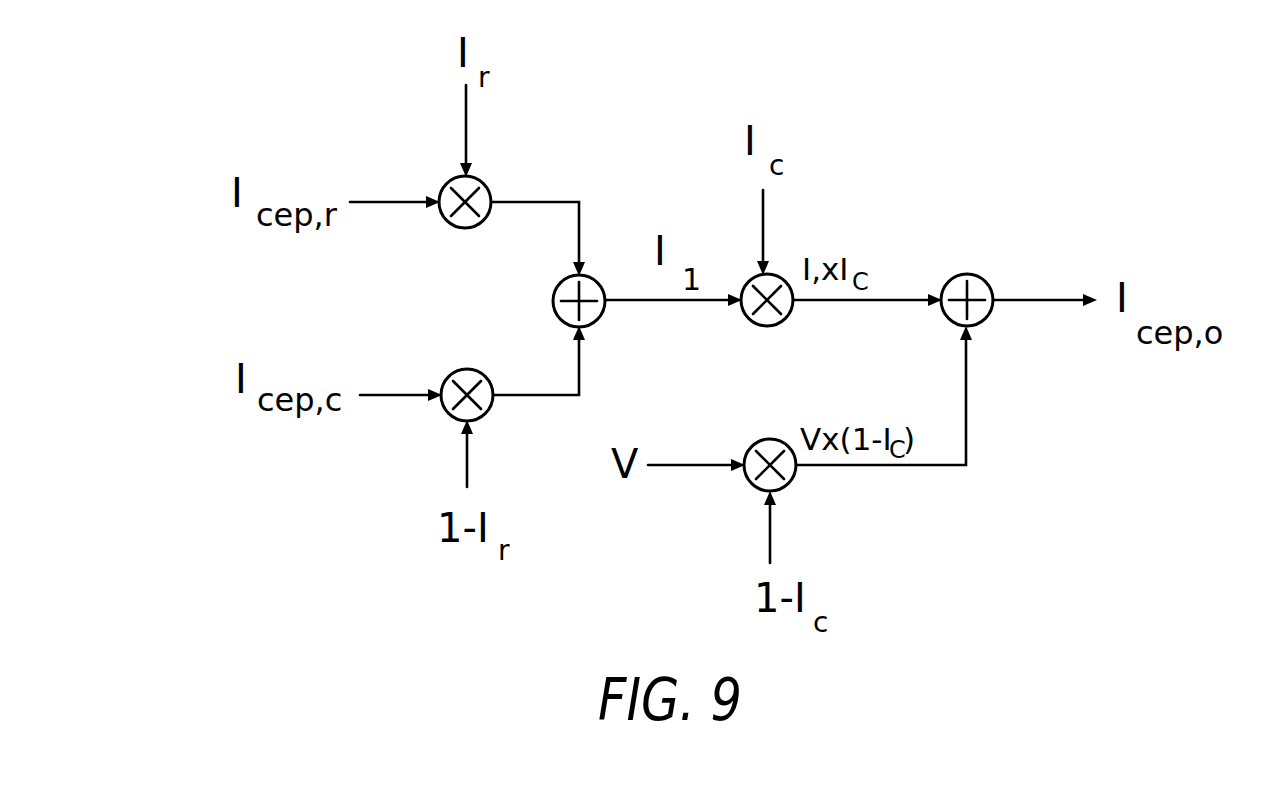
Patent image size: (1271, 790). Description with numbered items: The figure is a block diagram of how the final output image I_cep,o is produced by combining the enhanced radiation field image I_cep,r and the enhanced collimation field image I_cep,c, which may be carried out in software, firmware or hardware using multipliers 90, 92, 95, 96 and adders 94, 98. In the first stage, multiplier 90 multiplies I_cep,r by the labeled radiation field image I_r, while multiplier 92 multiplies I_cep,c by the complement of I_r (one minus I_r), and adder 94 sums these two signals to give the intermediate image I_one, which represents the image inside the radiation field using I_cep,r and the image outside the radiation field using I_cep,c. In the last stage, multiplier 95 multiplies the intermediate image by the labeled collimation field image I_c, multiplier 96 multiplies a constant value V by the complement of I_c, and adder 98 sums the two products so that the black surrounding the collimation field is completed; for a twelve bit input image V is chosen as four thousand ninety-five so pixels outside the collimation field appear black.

The multiplier 90 is at (490, 186).
The multiplier 92 is at (447, 378).
The adder 94 is at (560, 291).
The multiplier 95 is at (752, 322).
The multiplier 96 is at (757, 446).
The adder 98 is at (985, 281).